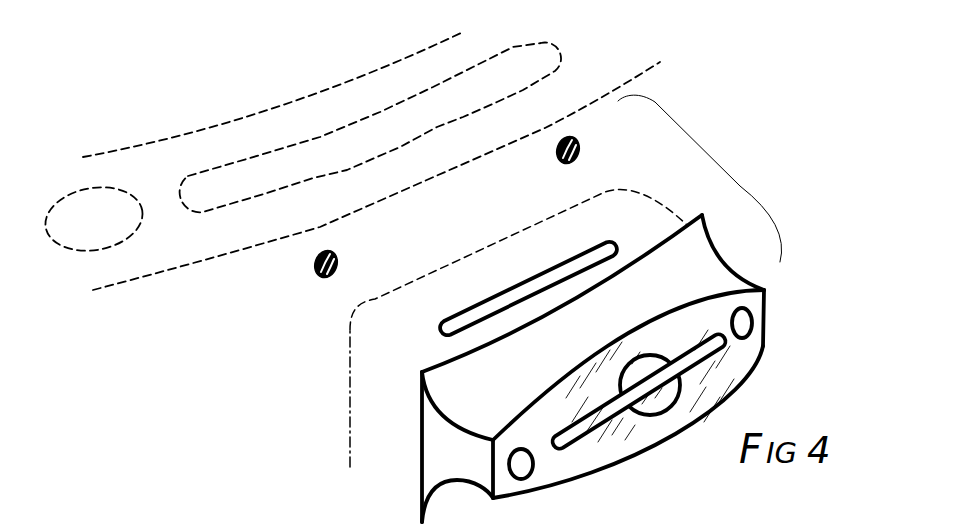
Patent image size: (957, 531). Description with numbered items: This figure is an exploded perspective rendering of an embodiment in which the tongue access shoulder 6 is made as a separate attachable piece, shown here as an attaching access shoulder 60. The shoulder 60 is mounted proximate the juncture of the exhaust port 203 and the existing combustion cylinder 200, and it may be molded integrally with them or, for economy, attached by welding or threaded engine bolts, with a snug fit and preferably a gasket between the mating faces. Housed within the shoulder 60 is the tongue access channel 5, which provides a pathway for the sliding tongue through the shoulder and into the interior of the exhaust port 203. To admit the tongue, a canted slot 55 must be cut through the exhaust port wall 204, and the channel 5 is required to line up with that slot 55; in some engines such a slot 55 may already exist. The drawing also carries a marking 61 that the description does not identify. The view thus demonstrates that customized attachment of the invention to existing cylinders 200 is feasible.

The combustion cylinder 200 is at (422, 68).
The exhaust port 203 is at (523, 262).
The exhaust port wall 204 is at (440, 292).
The eyelet 61 is at (313, 266).
The tongue access shoulder 6 is at (472, 400).
The attaching access shoulder 60 is at (443, 438).
The canted slot 55 is at (488, 310).
The tongue access channel 5 is at (565, 425).